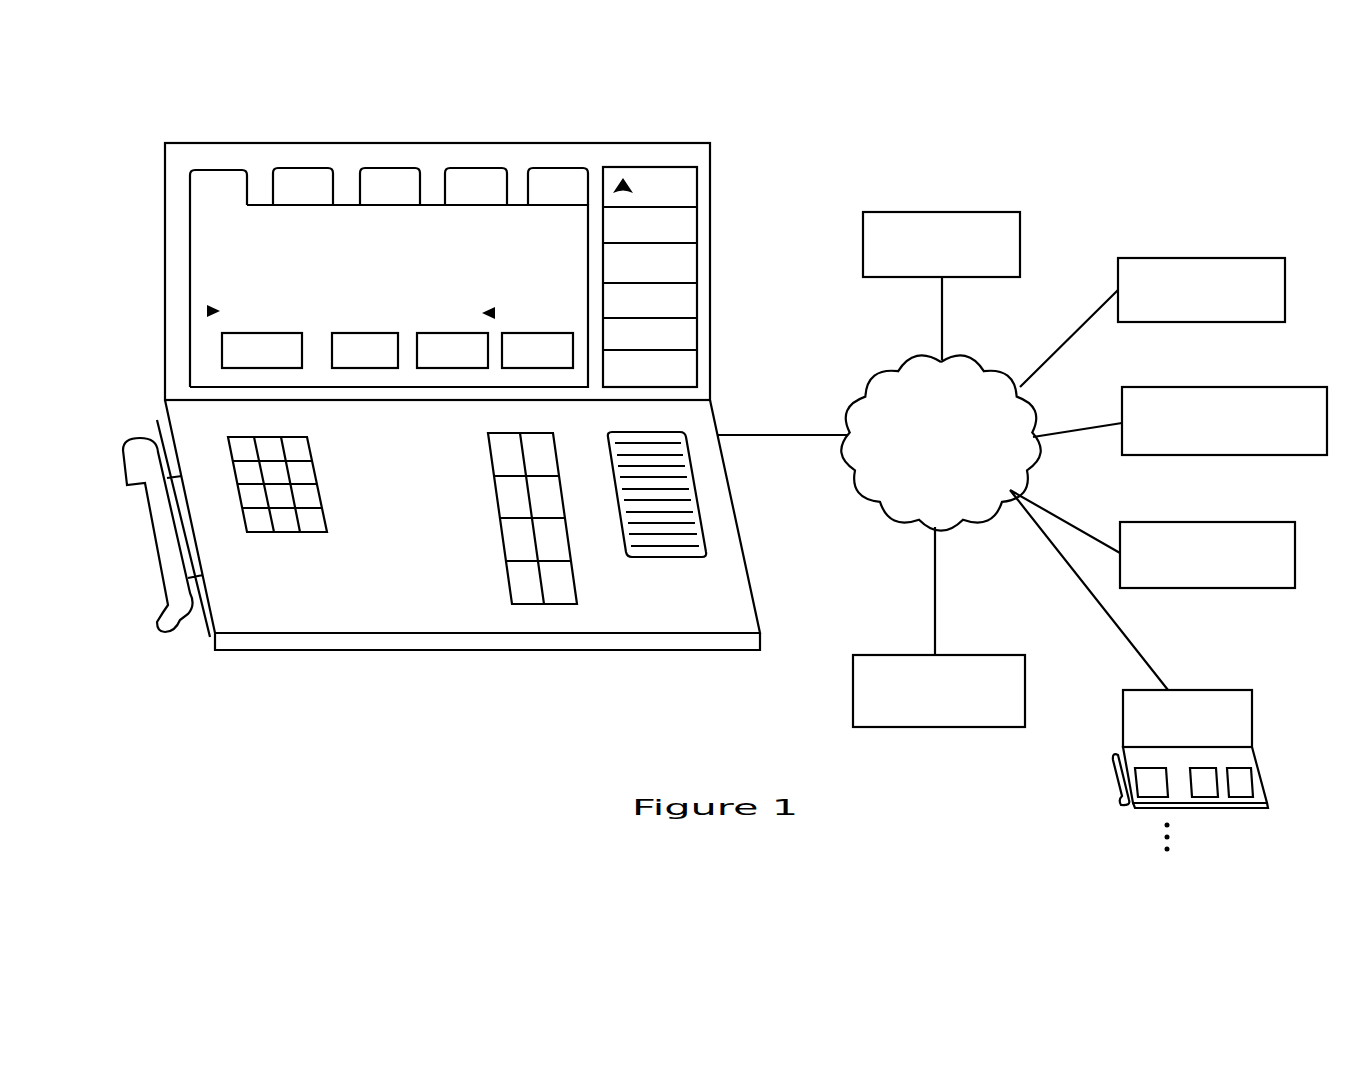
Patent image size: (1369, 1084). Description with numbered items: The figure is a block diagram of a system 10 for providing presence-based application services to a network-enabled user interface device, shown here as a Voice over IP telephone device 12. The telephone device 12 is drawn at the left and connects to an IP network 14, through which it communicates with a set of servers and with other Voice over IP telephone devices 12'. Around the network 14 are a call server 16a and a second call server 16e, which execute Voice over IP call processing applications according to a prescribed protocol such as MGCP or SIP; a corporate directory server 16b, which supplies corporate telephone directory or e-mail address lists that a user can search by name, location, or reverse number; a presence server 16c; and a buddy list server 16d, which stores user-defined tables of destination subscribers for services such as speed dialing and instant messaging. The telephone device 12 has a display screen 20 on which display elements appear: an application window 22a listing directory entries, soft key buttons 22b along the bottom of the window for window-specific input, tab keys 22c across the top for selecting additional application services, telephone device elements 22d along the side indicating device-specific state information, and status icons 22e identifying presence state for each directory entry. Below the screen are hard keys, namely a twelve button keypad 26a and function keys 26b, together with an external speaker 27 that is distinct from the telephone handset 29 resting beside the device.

The system 10 is at (425, 766).
The Voice over IP telephone device 12 is at (458, 586).
The other Voice over IP telephone devices 12' is at (1196, 752).
The IP network 14 is at (955, 490).
The call server 16a is at (986, 215).
The corporate directory server 16b is at (1243, 262).
The presence server 16c is at (1262, 390).
The buddy list server 16d is at (1212, 525).
The call server 16e is at (1022, 682).
The display screen 20 is at (179, 155).
The application window 22a is at (200, 213).
The soft key buttons 22b is at (268, 370).
The tab keys 22c is at (470, 168).
The telephone device elements 22d is at (686, 186).
The status icons 22e is at (539, 224).
The twelve button keypad 26a is at (276, 545).
The function keys 26b is at (483, 482).
The external speaker 27 is at (652, 557).
The telephone handset 29 is at (176, 636).